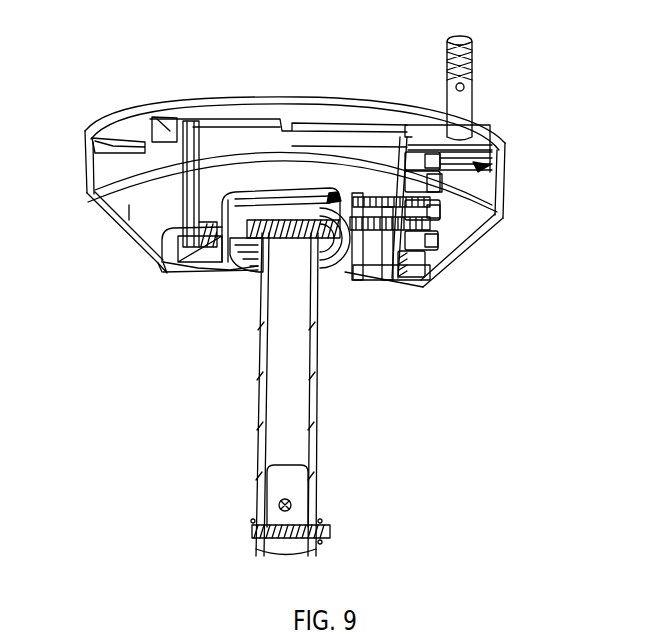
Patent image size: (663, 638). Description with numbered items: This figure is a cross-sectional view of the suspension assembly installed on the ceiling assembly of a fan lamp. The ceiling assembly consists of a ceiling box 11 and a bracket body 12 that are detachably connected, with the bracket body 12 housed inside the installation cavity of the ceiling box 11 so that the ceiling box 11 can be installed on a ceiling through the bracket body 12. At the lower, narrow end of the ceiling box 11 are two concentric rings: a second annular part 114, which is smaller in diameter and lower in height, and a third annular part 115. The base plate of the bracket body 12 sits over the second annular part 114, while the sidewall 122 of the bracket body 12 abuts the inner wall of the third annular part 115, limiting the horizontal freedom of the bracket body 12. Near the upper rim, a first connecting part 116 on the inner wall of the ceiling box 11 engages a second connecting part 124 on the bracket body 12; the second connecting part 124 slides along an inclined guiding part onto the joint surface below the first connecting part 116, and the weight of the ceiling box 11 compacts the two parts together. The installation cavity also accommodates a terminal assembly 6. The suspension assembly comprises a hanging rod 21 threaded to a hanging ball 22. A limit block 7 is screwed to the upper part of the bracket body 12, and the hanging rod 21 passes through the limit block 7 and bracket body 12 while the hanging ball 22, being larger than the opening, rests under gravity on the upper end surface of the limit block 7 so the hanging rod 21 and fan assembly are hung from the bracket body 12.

The ceiling box 11 is at (253, 108).
The bracket body 12 is at (150, 120).
The sidewall 122 is at (95, 197).
The third annular part 115 is at (140, 247).
The second annular part 114 is at (163, 270).
The limit block 7 is at (202, 248).
The hanging ball 22 is at (352, 268).
The hanging rod 21 is at (287, 357).
The first connecting part 116 is at (503, 152).
The second connecting part 124 is at (470, 167).
The terminal assembly 6 is at (440, 212).